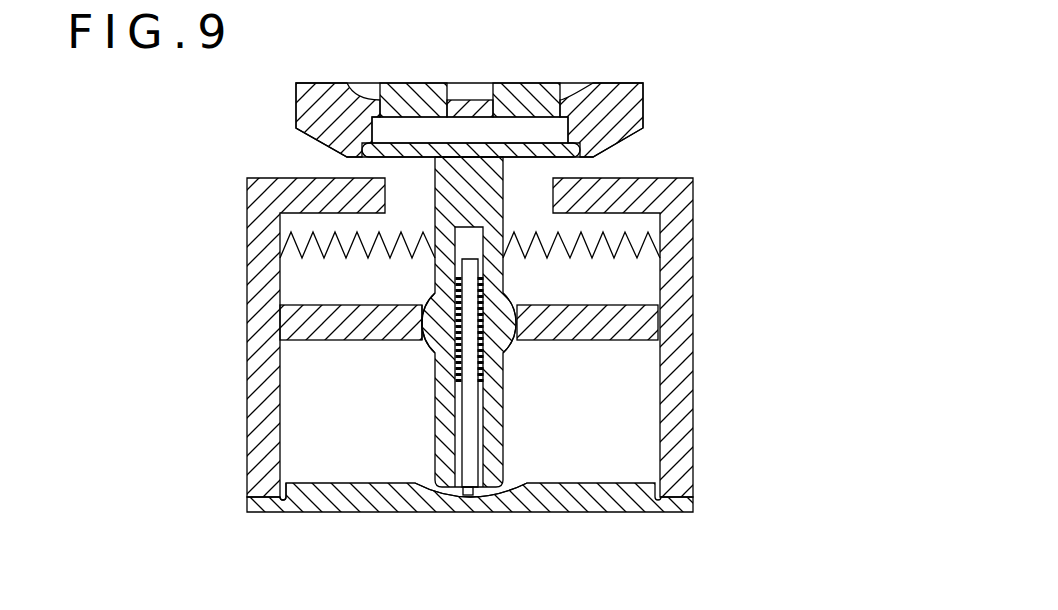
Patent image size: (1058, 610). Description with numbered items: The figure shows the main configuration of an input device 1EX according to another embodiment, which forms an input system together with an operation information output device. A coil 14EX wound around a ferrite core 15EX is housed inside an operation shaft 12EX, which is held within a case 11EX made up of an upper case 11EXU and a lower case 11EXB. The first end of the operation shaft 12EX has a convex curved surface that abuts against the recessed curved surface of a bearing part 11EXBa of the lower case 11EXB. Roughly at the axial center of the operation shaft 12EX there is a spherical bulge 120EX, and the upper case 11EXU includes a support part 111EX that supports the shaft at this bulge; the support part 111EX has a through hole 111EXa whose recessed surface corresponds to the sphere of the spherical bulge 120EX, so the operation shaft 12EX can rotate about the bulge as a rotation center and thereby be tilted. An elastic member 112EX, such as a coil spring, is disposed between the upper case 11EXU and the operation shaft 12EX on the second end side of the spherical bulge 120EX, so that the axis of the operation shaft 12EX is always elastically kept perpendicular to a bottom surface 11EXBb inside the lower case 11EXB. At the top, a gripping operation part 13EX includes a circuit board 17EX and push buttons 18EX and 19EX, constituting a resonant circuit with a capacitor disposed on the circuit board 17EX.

The input device 1EX is at (705, 203).
The case 11EX is at (257, 345).
The upper case 11EXU is at (687, 325).
The lower case 11EXB is at (627, 503).
The bearing part 11EXBa is at (427, 490).
The bottom surface 11EXBb is at (290, 512).
The operation shaft 12EX is at (445, 457).
The gripping operation part 13EX is at (303, 103).
The coil 14EX is at (500, 385).
The ferrite core 15EX is at (470, 425).
The circuit board 17EX is at (560, 128).
The push button 18EX is at (407, 88).
The push button 19EX is at (525, 90).
The support part 111EX is at (333, 337).
The through hole 111EXa is at (425, 305).
The elastic member 112EX is at (327, 232).
The spherical bulge 120EX is at (497, 305).